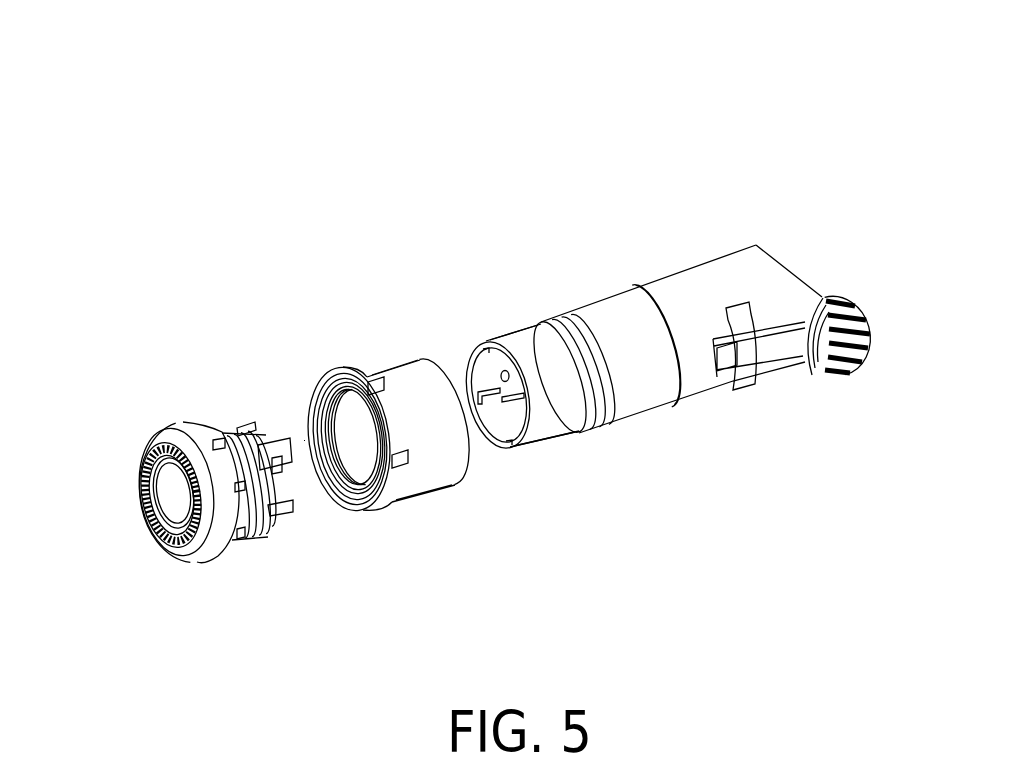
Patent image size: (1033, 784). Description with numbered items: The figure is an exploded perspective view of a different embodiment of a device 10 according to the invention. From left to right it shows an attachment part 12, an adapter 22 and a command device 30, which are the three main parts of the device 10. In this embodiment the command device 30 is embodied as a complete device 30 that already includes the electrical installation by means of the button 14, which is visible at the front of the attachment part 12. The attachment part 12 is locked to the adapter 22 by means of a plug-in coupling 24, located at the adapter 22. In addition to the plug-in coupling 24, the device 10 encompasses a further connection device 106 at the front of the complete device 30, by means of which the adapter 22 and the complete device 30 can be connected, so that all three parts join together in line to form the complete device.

The device 10 is at (314, 302).
The attachment part 12 is at (159, 401).
The button 14 is at (125, 542).
The adapter 22 is at (408, 336).
The plug-in coupling 24 is at (403, 522).
The command device 30 is at (619, 236).
The further connection device 106 is at (542, 497).